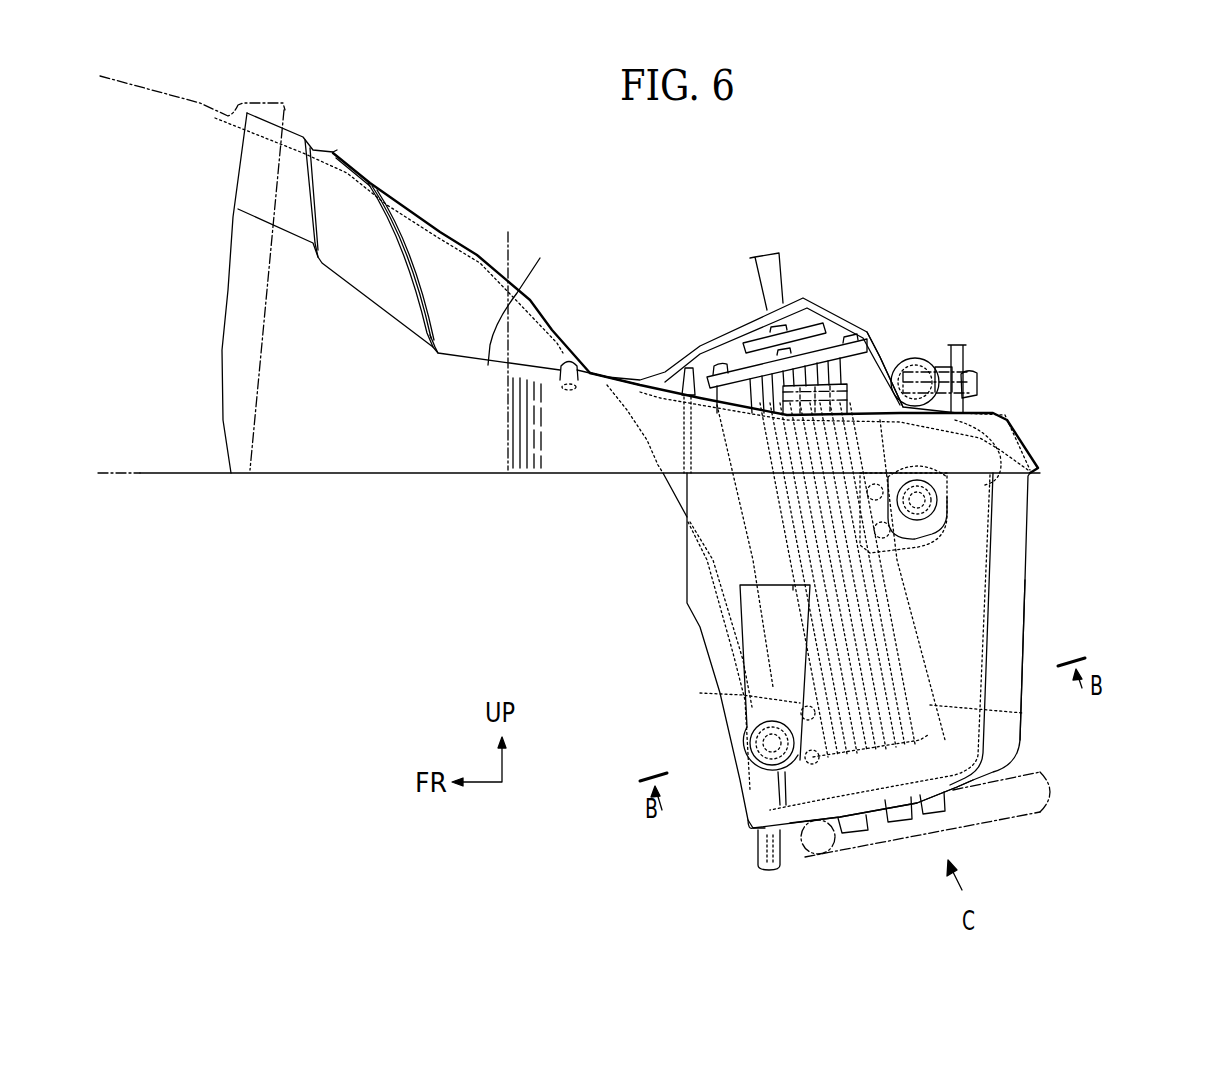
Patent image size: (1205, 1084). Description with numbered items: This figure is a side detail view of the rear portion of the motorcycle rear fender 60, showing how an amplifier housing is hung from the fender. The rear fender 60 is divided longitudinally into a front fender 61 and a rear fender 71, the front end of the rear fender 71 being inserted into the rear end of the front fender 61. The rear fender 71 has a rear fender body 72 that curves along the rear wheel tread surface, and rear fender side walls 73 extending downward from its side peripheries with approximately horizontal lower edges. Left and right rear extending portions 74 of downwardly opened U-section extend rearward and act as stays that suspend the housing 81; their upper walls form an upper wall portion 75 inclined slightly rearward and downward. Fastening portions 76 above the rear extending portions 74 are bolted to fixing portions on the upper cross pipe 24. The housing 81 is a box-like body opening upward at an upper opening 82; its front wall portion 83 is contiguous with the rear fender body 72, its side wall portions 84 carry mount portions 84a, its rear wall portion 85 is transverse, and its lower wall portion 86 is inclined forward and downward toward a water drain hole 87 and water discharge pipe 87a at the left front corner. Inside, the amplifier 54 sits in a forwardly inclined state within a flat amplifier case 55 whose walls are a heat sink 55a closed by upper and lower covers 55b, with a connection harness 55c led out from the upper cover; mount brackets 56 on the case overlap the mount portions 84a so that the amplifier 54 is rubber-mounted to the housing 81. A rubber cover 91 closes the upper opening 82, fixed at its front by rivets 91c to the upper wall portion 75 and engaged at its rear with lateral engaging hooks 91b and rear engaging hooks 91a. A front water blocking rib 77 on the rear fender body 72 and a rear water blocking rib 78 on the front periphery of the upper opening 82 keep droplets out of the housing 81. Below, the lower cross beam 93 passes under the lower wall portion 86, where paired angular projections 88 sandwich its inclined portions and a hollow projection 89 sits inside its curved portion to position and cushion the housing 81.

The upper cross pipe 24 is at (916, 357).
The amplifier 54 is at (968, 580).
The amplifier case 55 is at (923, 605).
The heat sink 55a is at (1023, 713).
The cover 55b is at (830, 325).
The connection harness 55c is at (777, 277).
The mount bracket 56 is at (923, 547).
The rear fender 60 is at (331, 261).
The front fender 61 is at (160, 91).
The rear fender 71 is at (481, 248).
The rear fender body 72 is at (433, 243).
The rear fender side wall 73 is at (360, 453).
The rear extending portion 74 is at (980, 410).
The upper wall portion 75 is at (522, 350).
The fastening portion 76 is at (963, 345).
The front water blocking rib 77 is at (348, 157).
The rear water blocking rib 78 is at (657, 368).
The housing 81 is at (1033, 501).
The upper opening 82 is at (1000, 420).
The front wall portion 83 is at (690, 607).
The side wall portion 84 is at (963, 628).
The mount portion 84a is at (948, 500).
The rear wall portion 85 is at (1022, 558).
The lower wall portion 86 is at (967, 788).
The water drain hole 87 is at (747, 800).
The water discharge pipe 87a is at (755, 860).
The angular projection 88 is at (935, 813).
The hollow projection 89 is at (857, 830).
The cover 91 is at (713, 340).
The rear engaging hook 91a is at (1020, 437).
The lateral engaging hook 91b is at (873, 347).
The rivet 91c is at (570, 355).
The lower cross beam 93 is at (1033, 814).